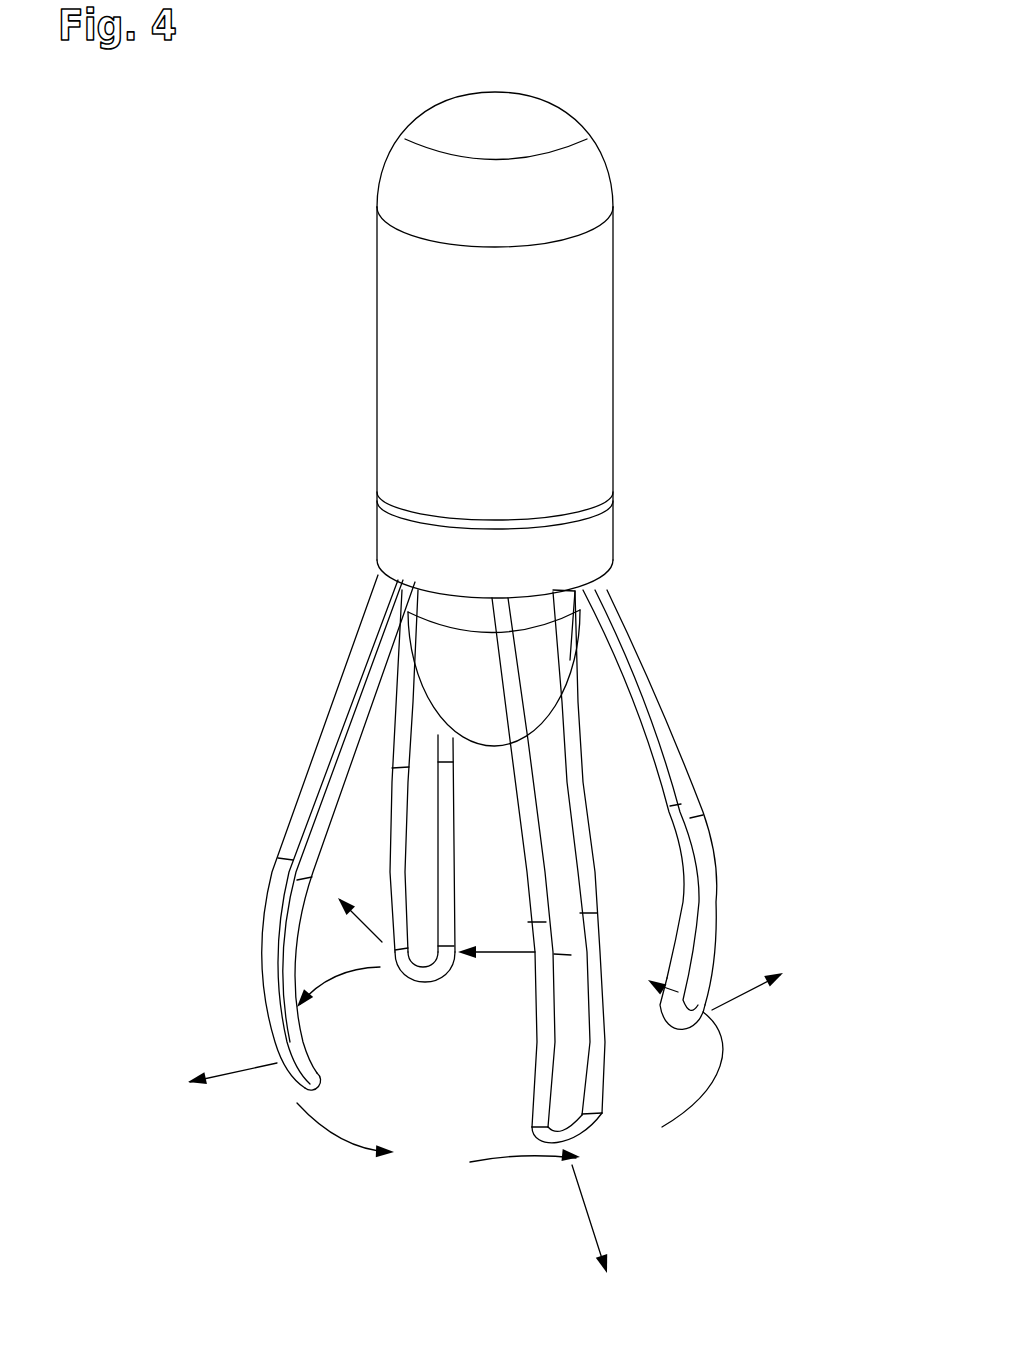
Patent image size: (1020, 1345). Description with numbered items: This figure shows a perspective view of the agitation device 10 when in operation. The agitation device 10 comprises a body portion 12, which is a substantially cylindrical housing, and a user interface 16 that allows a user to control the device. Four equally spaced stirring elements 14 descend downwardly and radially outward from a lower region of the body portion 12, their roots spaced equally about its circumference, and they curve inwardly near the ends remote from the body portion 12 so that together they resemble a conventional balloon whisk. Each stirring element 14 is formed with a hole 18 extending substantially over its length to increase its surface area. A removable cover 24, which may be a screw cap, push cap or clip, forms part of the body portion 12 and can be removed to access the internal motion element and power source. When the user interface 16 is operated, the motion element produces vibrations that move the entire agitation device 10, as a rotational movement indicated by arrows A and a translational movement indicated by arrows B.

The agitation device 10 is at (660, 148).
The body portion 12 is at (432, 360).
The stirring elements 14 is at (650, 687).
The user interface 16 is at (502, 115).
The hole 18 is at (415, 837).
The removable cover 24 is at (560, 605).